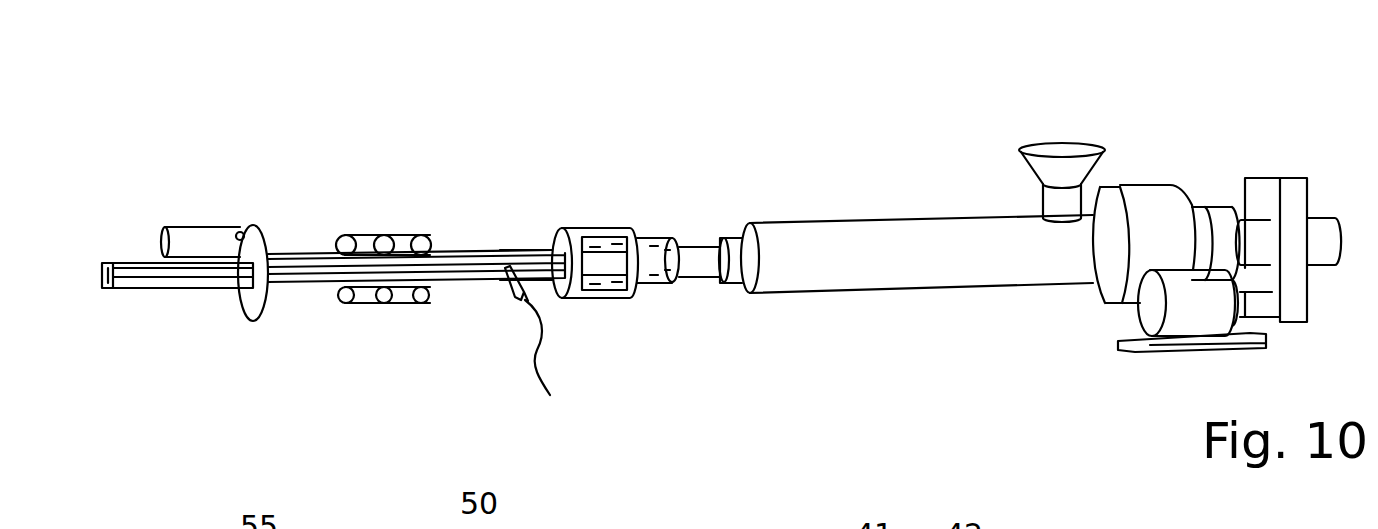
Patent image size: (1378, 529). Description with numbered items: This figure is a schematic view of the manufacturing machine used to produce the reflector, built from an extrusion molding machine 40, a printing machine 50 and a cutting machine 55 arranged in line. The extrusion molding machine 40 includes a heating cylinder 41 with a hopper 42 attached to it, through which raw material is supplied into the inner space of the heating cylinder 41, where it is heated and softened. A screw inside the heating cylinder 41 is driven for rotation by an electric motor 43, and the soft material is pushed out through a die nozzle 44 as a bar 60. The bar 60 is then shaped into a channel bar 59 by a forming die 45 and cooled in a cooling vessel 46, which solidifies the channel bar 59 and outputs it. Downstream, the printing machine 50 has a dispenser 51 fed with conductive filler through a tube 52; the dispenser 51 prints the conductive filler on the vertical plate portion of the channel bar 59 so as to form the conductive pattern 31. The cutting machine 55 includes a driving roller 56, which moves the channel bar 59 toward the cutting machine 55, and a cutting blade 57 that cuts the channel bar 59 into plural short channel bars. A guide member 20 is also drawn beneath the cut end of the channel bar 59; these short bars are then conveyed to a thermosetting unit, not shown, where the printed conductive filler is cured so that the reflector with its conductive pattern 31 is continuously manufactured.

The guide rail 20 is at (172, 292).
The conductive pattern 31 is at (318, 275).
The extrusion molding machine 40 is at (1041, 192).
The heating cylinder 41 is at (850, 235).
The hopper 42 is at (1043, 152).
The electric motor 43 is at (1152, 314).
The die nozzle 44 is at (728, 240).
The forming die 45 is at (655, 240).
The cooling vessel 46 is at (555, 240).
The printing machine 50 is at (477, 125).
The dispenser 51 is at (512, 297).
The tube 52 is at (531, 382).
The cutting machine 55 is at (232, 151).
The driving roller 56 is at (380, 235).
The cutting blade 57 is at (236, 246).
The channel bar 59 is at (467, 250).
The bar 60 is at (713, 266).